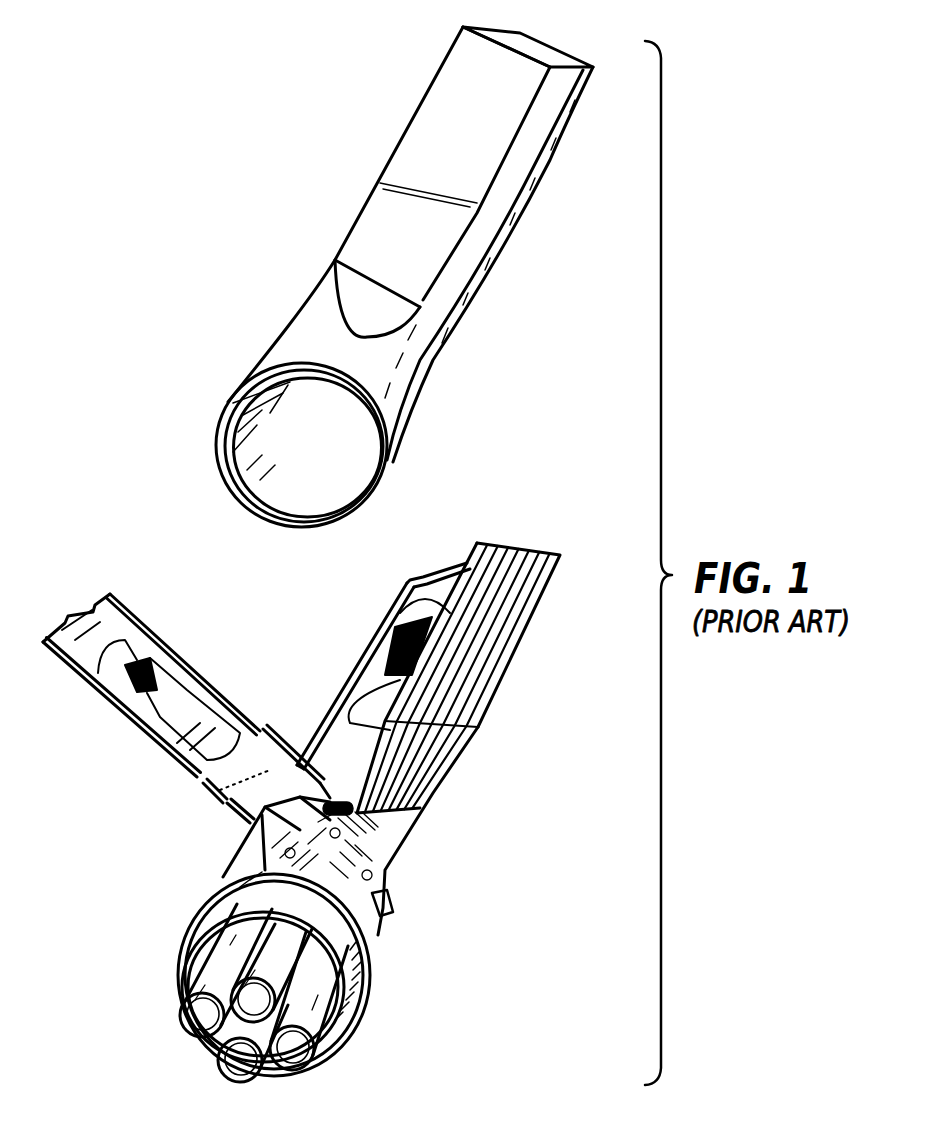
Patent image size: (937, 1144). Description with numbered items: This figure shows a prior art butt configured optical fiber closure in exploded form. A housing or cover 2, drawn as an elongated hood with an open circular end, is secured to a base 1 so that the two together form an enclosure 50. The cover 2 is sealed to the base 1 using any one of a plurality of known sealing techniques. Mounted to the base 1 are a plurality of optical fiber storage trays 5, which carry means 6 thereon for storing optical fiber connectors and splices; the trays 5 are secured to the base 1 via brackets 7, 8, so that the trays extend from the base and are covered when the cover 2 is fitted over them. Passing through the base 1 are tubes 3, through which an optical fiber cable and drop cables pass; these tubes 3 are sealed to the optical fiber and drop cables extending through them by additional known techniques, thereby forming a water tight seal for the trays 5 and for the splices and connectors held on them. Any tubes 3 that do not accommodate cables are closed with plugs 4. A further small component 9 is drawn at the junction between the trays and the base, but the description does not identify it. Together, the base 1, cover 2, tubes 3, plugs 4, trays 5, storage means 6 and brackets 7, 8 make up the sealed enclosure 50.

The base 1 is at (190, 920).
The housing or cover 2 is at (306, 318).
The tubes 3 is at (187, 975).
The plugs 4 is at (187, 1023).
The optical fiber storage trays 5 is at (520, 630).
The means for storing optical fiber connectors and splices 6 is at (397, 640).
The bracket 7 is at (360, 848).
The bracket 8 is at (378, 900).
The hinge clip 9 is at (323, 722).
The enclosure 50 is at (533, 375).